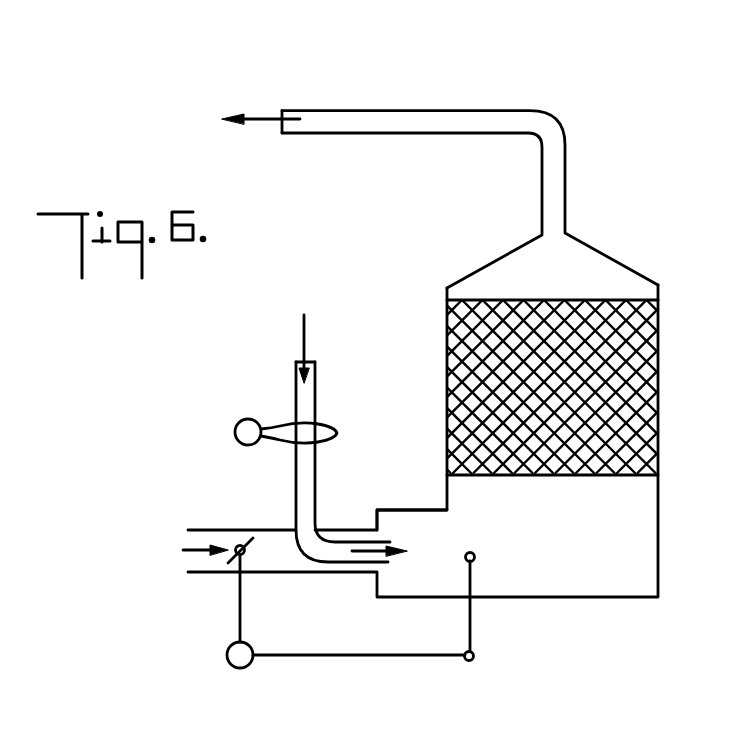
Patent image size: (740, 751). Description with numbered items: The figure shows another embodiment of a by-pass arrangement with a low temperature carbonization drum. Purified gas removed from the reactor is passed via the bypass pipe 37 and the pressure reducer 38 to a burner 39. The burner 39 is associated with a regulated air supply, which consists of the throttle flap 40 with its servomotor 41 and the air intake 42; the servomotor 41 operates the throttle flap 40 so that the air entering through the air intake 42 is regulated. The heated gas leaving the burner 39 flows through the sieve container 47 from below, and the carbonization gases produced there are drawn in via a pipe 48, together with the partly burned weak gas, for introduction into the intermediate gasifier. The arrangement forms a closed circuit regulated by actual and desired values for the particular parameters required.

The bypass pipe 37 is at (296, 389).
The pressure reducer 38 is at (233, 431).
The burner 39 is at (397, 505).
The throttle flap 40 is at (242, 533).
The servomotor 41 is at (229, 658).
The air intake 42 is at (225, 537).
The sieve container 47 is at (460, 320).
The pipe 48 is at (391, 107).